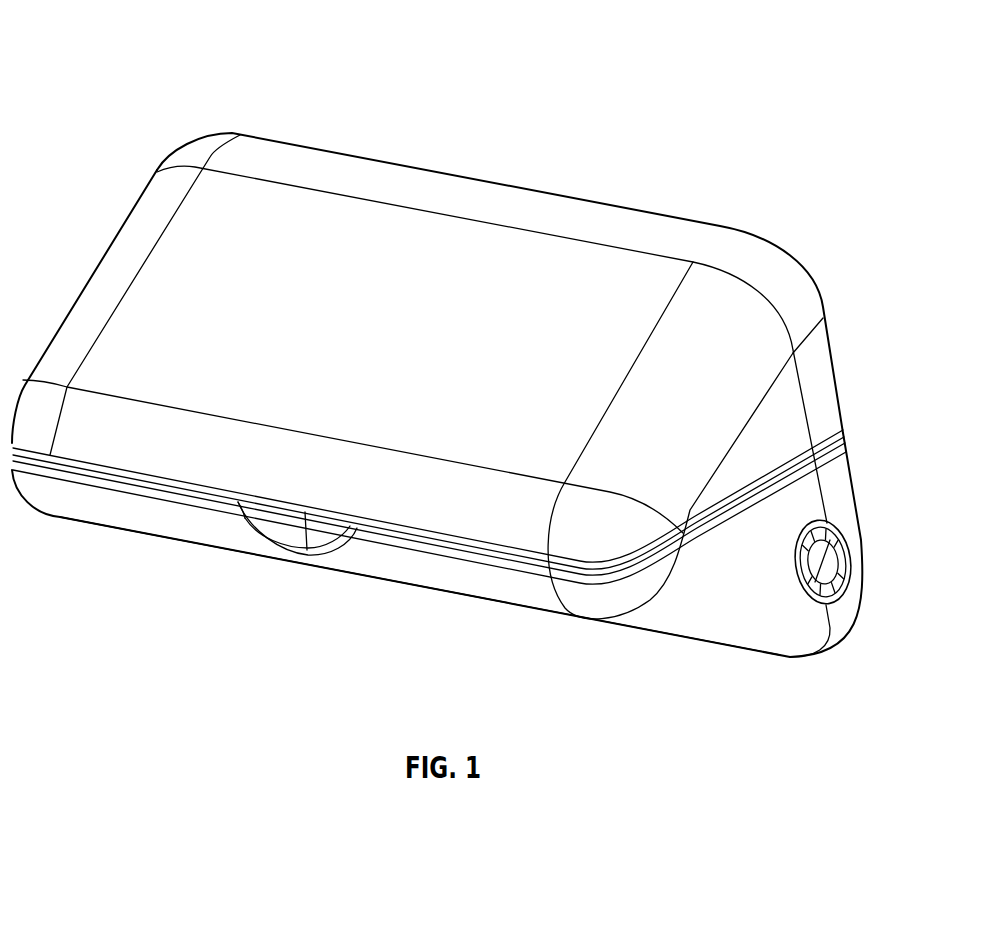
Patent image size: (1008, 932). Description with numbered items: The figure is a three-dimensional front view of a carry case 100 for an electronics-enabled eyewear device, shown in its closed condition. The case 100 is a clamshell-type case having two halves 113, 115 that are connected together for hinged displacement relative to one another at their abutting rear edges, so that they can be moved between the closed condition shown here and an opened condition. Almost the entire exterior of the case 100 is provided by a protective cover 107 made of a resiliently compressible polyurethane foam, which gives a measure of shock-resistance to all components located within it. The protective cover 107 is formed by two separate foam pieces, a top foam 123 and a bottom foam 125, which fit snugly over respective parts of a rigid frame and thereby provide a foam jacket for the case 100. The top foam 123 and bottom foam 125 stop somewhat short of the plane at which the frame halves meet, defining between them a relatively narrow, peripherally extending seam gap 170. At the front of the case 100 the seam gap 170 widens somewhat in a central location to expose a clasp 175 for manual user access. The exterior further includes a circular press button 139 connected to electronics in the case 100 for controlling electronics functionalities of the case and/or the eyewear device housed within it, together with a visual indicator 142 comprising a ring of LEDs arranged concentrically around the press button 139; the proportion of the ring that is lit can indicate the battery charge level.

The carry case 100 is at (108, 40).
The protective cover 107 is at (418, 345).
The top half 113 is at (110, 280).
The bottom half 115 is at (122, 517).
The top foam 123 is at (628, 222).
The bottom foam 125 is at (456, 580).
The press button 139 is at (830, 560).
The visual indicator 142 is at (840, 533).
The seam gap 170 is at (175, 478).
The clasp 175 is at (297, 537).